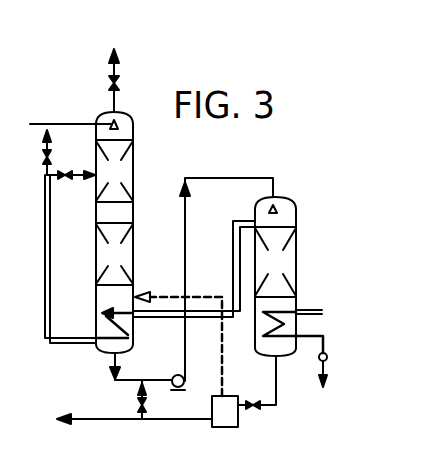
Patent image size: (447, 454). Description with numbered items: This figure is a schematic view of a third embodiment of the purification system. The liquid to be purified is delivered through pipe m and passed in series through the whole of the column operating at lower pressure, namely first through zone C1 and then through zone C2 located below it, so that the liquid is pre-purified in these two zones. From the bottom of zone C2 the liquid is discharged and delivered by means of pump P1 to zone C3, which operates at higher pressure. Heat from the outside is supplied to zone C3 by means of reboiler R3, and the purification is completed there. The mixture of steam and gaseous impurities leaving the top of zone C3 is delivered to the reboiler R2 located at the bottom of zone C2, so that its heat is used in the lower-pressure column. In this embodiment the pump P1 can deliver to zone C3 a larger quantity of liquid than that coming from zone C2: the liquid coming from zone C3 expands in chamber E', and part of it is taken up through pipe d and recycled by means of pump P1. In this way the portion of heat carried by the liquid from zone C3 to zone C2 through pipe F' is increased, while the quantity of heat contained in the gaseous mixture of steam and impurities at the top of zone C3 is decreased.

The zone C1 is at (114, 125).
The zone C2 is at (114, 277).
The zone C3 is at (214, 276).
The pipe m is at (70, 114).
The reboiler R2 is at (88, 236).
The reboiler R3 is at (295, 338).
The pipe f' F' is at (178, 335).
The pump P1 is at (191, 284).
The pipe d is at (134, 402).
The chamber E' is at (233, 391).